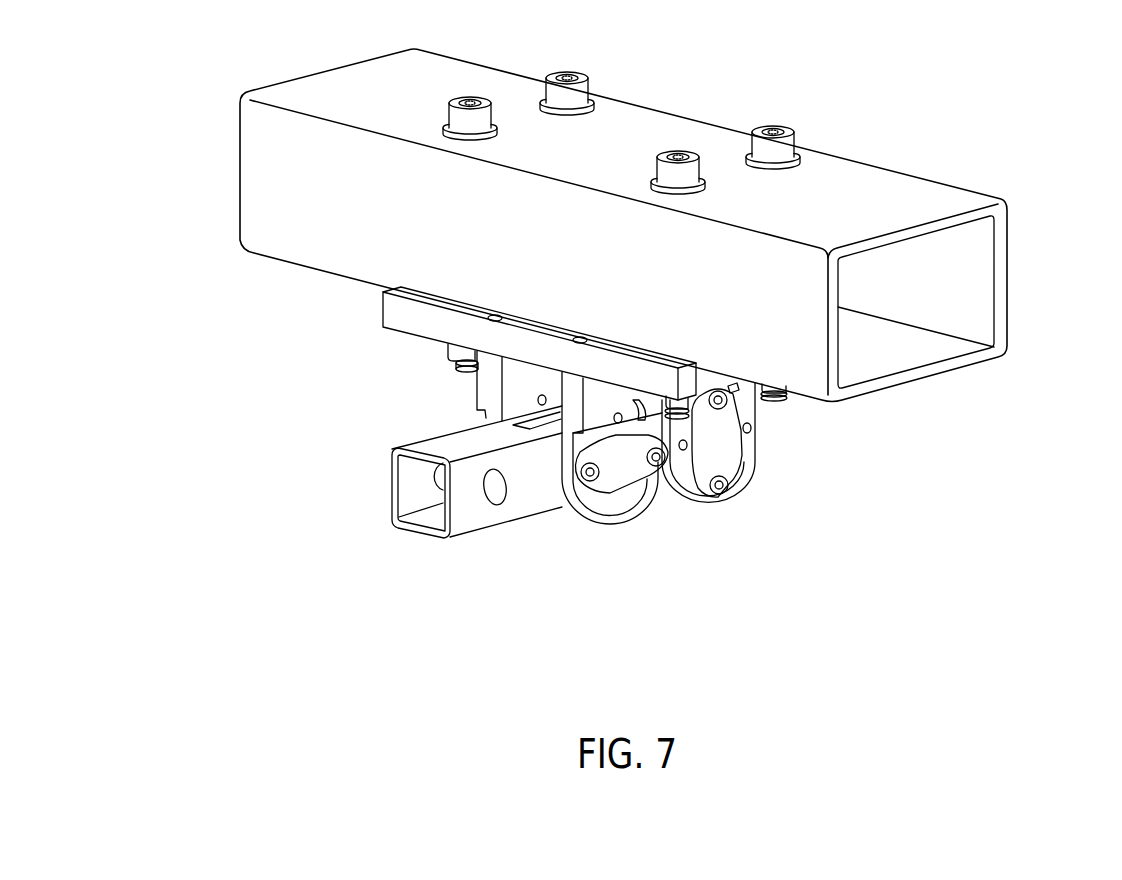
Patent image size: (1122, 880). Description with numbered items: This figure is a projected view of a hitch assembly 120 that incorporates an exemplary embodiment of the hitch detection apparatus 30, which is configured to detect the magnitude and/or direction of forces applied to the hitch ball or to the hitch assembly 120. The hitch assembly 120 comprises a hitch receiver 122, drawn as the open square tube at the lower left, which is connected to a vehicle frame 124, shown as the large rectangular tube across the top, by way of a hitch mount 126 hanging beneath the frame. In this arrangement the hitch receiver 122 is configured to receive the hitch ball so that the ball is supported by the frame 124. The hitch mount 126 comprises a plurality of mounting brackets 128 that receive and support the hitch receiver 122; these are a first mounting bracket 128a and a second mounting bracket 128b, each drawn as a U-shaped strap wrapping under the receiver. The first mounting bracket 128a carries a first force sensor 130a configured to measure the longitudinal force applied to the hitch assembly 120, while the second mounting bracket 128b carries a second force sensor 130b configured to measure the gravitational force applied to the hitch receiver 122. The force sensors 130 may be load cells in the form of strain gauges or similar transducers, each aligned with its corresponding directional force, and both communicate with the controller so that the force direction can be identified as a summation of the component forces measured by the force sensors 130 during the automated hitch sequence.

The hitch assembly 120 is at (318, 372).
The vehicle frame 124 is at (1003, 331).
The hitch receiver 122 is at (392, 482).
The hitch mount 126 is at (754, 441).
The mounting brackets 128 is at (677, 468).
The first mounting bracket 128a is at (573, 513).
The second mounting bracket 128b is at (750, 470).
The force sensors 130 is at (699, 520).
The first force sensor 130a is at (611, 473).
The second force sensor 130b is at (718, 460).
The hitch detection apparatus 30 is at (692, 574).